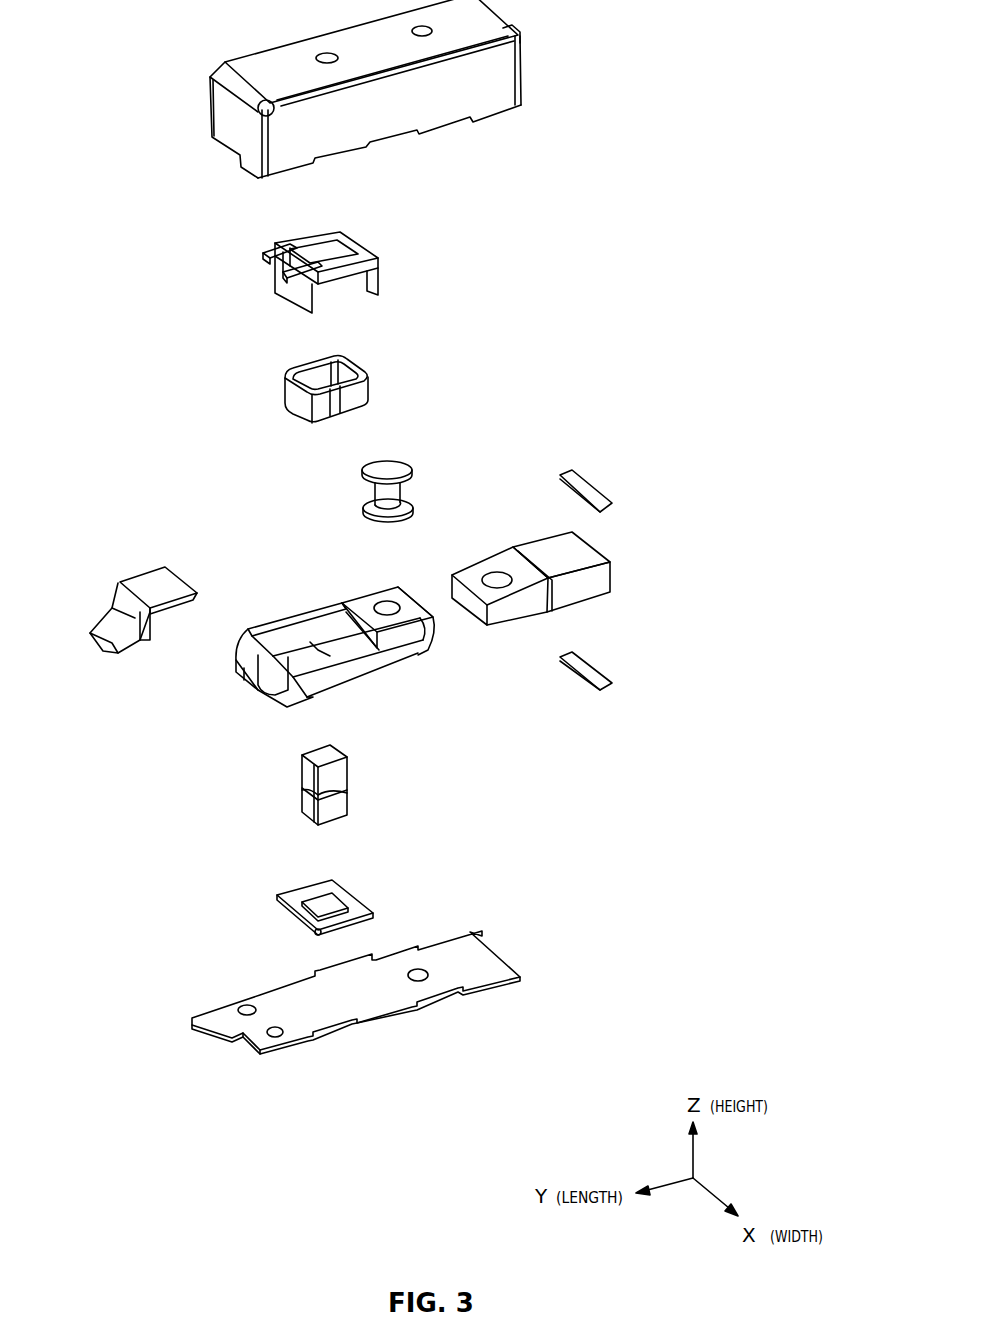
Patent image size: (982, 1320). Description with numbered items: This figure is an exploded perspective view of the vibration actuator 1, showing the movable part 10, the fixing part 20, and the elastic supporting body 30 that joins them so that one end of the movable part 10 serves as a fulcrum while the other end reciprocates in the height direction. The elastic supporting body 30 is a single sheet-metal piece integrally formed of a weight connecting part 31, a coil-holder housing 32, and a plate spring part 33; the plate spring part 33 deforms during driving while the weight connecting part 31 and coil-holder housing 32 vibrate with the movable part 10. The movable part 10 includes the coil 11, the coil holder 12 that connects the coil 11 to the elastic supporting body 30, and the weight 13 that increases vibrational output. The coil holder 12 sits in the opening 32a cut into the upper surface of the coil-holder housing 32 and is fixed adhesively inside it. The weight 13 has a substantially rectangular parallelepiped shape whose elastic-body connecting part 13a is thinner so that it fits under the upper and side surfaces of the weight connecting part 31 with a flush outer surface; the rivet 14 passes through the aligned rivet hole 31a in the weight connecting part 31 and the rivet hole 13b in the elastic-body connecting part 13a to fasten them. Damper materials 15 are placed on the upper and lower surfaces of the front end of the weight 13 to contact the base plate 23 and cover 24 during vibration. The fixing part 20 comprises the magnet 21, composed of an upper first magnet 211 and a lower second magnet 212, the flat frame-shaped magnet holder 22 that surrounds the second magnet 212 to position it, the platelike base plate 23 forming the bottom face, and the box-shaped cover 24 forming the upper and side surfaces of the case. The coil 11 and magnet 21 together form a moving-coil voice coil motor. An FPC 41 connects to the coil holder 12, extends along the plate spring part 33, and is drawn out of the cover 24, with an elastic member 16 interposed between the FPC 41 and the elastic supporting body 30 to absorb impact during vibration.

The vibration actuator 1 is at (112, 320).
The movable part 10 is at (703, 198).
The coil 11 is at (370, 383).
The coil holder 12 is at (377, 270).
The weight 13 is at (612, 575).
The elastic-body connecting part 13a is at (500, 622).
The rivet hole 13b is at (497, 574).
The rivet 14 is at (376, 493).
The damper material 15 is at (590, 482).
The elastic member 16 is at (185, 608).
The fixing part 20 is at (707, 757).
The magnet 21 is at (427, 757).
The first magnet 211 is at (350, 772).
The second magnet 212 is at (350, 810).
The magnet holder 22 is at (350, 896).
The base plate 23 is at (508, 963).
The cover 24 is at (523, 57).
The elastic supporting body 30 is at (390, 665).
The weight connecting part 31 is at (368, 600).
The rivet hole 31a is at (410, 645).
The coil-holder housing 32 is at (310, 617).
The opening 32a is at (332, 642).
The plate spring part 33 is at (235, 672).
The FPC 41 is at (115, 608).